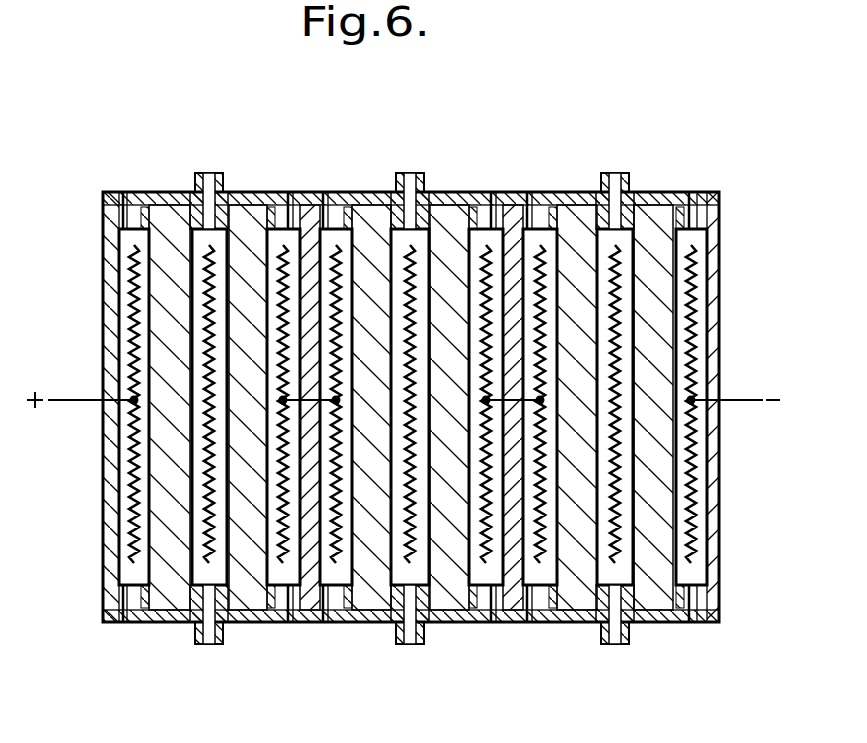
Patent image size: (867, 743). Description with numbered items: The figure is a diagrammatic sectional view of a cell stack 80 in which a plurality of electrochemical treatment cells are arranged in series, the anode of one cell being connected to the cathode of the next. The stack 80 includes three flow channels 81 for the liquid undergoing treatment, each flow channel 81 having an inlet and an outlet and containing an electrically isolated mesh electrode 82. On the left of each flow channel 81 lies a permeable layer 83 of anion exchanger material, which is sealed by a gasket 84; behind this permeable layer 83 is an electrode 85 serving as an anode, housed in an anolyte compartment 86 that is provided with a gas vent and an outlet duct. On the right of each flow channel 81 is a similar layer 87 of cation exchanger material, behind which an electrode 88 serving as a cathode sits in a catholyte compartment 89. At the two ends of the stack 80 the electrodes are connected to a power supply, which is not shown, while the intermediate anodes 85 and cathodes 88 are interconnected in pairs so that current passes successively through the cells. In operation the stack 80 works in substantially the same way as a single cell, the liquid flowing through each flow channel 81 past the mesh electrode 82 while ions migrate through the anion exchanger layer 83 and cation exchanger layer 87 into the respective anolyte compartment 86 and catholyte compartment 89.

The cell stack 80 is at (575, 165).
The flow channel 81 is at (204, 243).
The mesh electrode 82 is at (200, 548).
The permeable layer of anion exchanger material 83 is at (172, 210).
The gasket 84 is at (145, 207).
The electrode 85 is at (337, 257).
The anolyte compartment 86 is at (130, 548).
The layer of cation exchanger material 87 is at (248, 595).
The electrode 88 is at (250, 190).
The catholyte compartment 89 is at (700, 352).